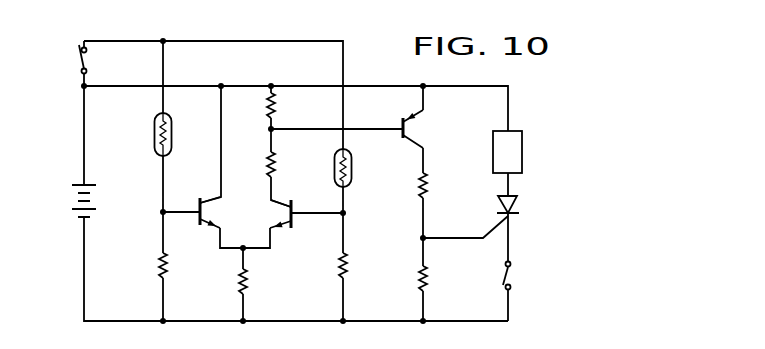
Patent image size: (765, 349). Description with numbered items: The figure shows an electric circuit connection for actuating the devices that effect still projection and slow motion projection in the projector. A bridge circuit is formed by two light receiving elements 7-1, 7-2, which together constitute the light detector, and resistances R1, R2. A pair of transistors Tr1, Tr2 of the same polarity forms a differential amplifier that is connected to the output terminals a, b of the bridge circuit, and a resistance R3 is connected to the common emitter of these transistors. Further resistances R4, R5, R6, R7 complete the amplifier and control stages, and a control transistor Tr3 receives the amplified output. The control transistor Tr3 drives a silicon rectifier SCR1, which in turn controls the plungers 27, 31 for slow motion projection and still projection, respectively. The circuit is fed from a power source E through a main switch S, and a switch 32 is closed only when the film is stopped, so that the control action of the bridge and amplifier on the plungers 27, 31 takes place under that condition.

The switch 32 is at (88, 60).
The power source E is at (65, 205).
The light receiving element 7-1 is at (171, 125).
The light receiving element 7-2 is at (352, 165).
The output terminal a is at (138, 220).
The output terminal b is at (380, 221).
The transistor Tr1 is at (213, 199).
The transistor Tr2 is at (279, 205).
The control transistor Tr3 is at (416, 124).
The resistance R1 is at (167, 265).
The resistance R2 is at (350, 265).
The resistance R3 is at (248, 280).
The resistance R4 is at (277, 108).
The resistance R5 is at (277, 163).
The resistance R6 is at (430, 180).
The resistance R7 is at (430, 283).
The plunger 27 is at (563, 150).
The plunger 31 is at (522, 149).
The silicon rectifier SCR1 is at (515, 207).
The main switch S is at (512, 272).